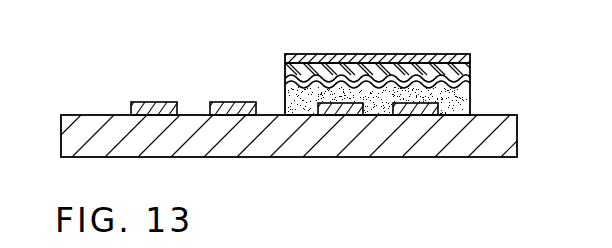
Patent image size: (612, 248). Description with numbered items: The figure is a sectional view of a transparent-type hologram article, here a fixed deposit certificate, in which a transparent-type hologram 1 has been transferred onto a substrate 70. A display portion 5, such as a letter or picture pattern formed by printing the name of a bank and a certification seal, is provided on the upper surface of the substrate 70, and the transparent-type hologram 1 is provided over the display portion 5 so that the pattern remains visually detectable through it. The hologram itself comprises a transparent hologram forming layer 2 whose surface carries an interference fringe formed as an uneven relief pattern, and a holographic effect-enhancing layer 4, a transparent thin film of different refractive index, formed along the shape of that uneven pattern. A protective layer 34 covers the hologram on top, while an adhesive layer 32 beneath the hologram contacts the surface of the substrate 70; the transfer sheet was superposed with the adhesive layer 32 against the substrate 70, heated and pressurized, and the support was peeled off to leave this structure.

The substrate 70 is at (97, 115).
The display portion 5 is at (232, 102).
The transparent-type hologram 1 is at (380, 61).
The protective layer 34 is at (437, 58).
The transparent hologram forming layer 2 is at (467, 72).
The holographic effect-enhancing layer 4 is at (470, 82).
The adhesive layer 32 is at (470, 100).